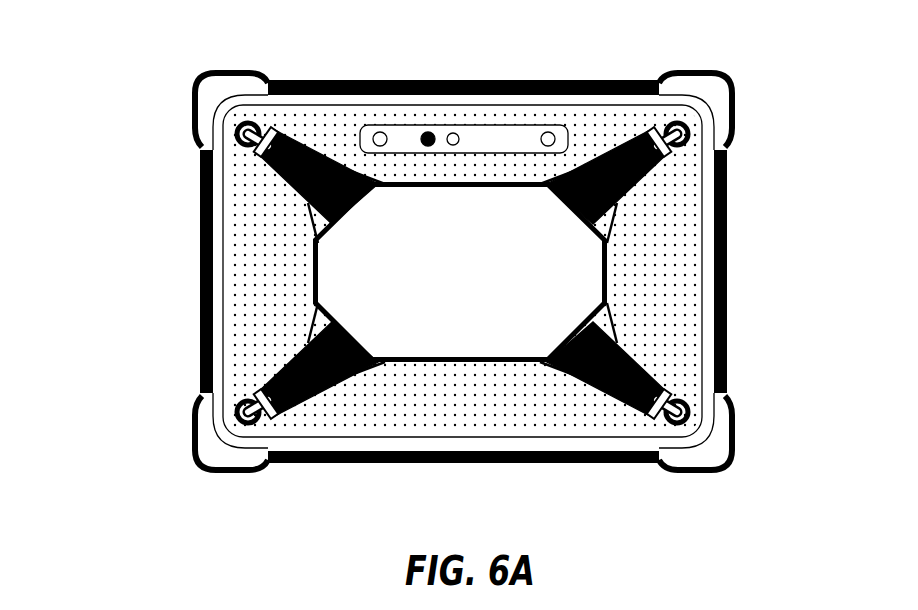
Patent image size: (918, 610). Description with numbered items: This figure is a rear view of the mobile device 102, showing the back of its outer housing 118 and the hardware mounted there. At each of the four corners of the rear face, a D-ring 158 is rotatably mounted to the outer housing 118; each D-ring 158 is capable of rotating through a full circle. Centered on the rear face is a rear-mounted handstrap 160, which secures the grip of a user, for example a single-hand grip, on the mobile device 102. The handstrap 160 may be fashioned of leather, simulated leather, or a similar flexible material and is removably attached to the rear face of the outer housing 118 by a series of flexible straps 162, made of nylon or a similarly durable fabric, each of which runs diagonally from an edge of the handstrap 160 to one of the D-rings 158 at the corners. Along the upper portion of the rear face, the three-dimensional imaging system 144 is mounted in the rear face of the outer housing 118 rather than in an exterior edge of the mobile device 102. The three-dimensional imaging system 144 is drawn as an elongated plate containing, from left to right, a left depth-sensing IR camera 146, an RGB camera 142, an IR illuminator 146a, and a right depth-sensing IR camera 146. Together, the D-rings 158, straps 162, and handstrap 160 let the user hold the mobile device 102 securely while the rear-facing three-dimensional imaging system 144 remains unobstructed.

The mobile device 102 is at (84, 91).
The outer housing 118 is at (458, 408).
The RGB camera 142 is at (428, 130).
The 3D imaging system 144 is at (490, 125).
The depth-sensing IR cameras 146 is at (380, 128).
The IR illuminator 146a is at (455, 131).
The D-rings 158 is at (200, 222).
The handstrap 160 is at (528, 249).
The flexible straps 162 is at (295, 350).